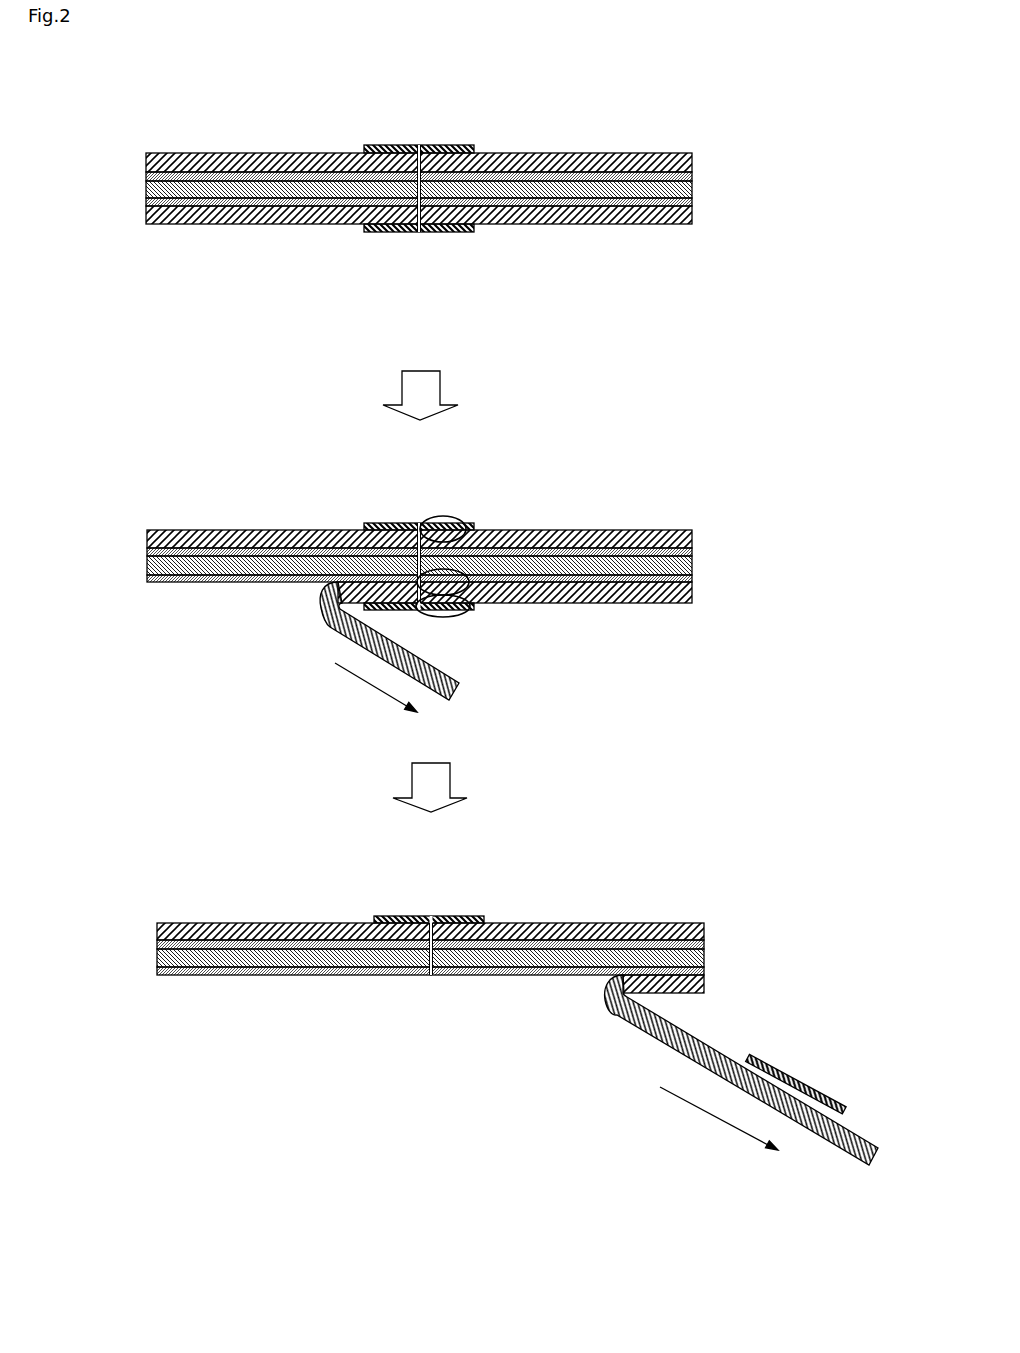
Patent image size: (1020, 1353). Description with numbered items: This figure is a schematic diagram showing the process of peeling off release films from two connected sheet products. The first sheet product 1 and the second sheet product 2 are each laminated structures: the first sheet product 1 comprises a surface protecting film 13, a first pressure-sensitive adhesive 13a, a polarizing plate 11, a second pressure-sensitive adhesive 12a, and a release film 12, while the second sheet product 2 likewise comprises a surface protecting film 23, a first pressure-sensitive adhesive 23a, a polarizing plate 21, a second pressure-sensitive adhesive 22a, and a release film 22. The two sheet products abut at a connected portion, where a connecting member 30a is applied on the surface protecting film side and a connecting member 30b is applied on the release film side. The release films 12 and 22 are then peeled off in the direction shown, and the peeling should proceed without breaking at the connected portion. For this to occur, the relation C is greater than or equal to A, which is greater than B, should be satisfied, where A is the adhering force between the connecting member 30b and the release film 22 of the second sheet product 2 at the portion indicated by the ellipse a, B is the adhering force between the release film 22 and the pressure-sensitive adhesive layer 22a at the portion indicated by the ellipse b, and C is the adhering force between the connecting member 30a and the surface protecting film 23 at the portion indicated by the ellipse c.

The first sheet product 1 is at (478, 628).
The second sheet product 2 is at (570, 545).
The polarizing plate 11 is at (146, 189).
The release film 12 is at (146, 214).
The second pressure-sensitive adhesive 12a is at (146, 201).
The surface protecting film 13 is at (146, 160).
The first pressure-sensitive adhesive 13a is at (146, 176).
The polarizing plate 21 is at (692, 189).
The release film 22 is at (692, 214).
The second pressure-sensitive adhesive layer 22a is at (692, 201).
The surface protecting film 23 is at (692, 160).
The first pressure-sensitive adhesive 23a is at (692, 176).
The connecting member 30a is at (418, 144).
The connecting member 30b is at (420, 234).
The ellipse a is at (447, 613).
The ellipse b is at (475, 588).
The ellipse c is at (455, 518).